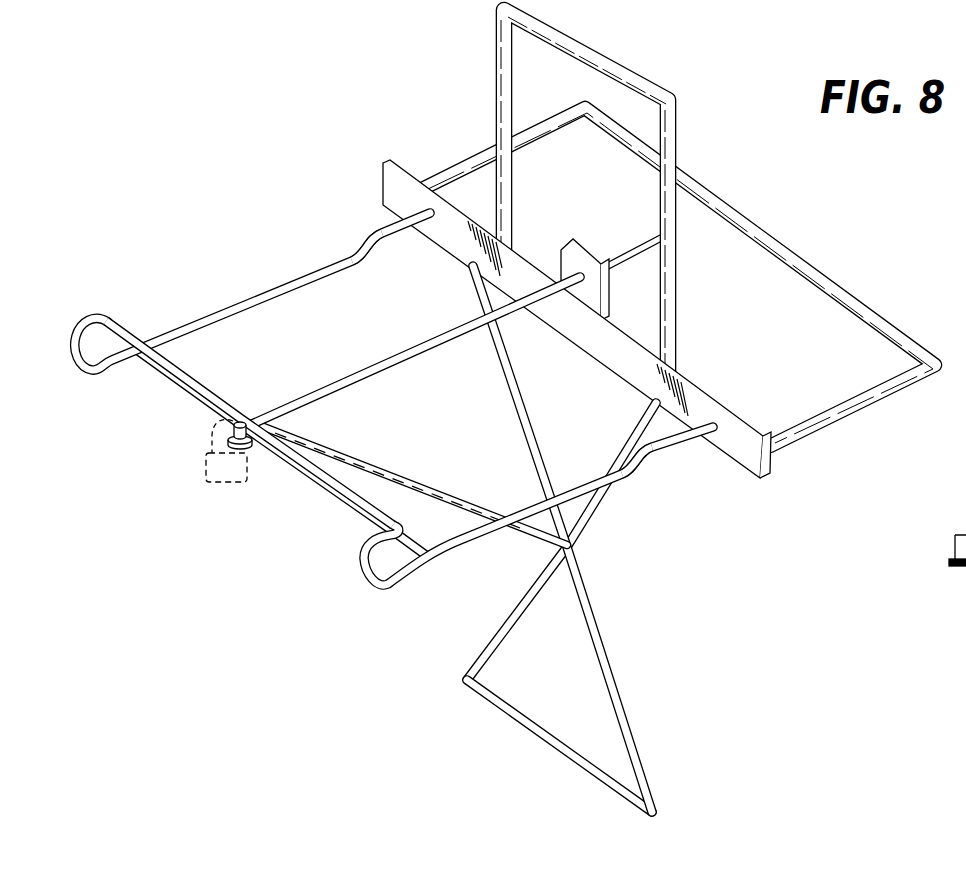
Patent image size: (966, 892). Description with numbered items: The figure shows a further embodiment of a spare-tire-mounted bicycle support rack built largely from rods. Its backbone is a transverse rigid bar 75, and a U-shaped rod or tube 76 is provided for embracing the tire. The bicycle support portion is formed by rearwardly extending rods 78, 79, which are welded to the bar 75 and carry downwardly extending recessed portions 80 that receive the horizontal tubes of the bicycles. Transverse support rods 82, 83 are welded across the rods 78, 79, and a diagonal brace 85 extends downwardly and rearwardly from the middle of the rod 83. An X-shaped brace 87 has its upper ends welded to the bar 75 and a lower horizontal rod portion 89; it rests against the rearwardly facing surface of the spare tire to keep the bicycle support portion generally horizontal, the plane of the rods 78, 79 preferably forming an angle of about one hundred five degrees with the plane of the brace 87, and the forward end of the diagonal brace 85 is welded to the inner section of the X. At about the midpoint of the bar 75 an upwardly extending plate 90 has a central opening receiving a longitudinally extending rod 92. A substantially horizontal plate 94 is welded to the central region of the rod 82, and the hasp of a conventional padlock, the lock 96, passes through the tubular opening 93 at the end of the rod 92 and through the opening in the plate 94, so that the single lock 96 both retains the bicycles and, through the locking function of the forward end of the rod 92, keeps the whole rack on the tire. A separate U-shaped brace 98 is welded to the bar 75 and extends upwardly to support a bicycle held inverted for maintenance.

The transverse rigid bar 75 is at (385, 170).
The U-shaped rod or tube 76 is at (787, 237).
The rearwardly extending rod 78 is at (258, 296).
The rearwardly extending rod 79 is at (601, 488).
The downwardly extending recessed portion 80 is at (366, 252).
The transverse support rod 82 is at (184, 368).
The transverse support rod 83 is at (181, 391).
The diagonal brace 85 is at (396, 474).
The X-shaped brace 87 is at (601, 640).
The lower horizontal rod portion 89 is at (497, 712).
The upwardly extending plate 90 is at (574, 240).
The longitudinally extending rod 92 is at (381, 361).
The tubular opening 93 is at (230, 431).
The horizontal plate 94 is at (251, 449).
The lock 96 is at (208, 482).
The U-shaped brace 98 is at (679, 121).